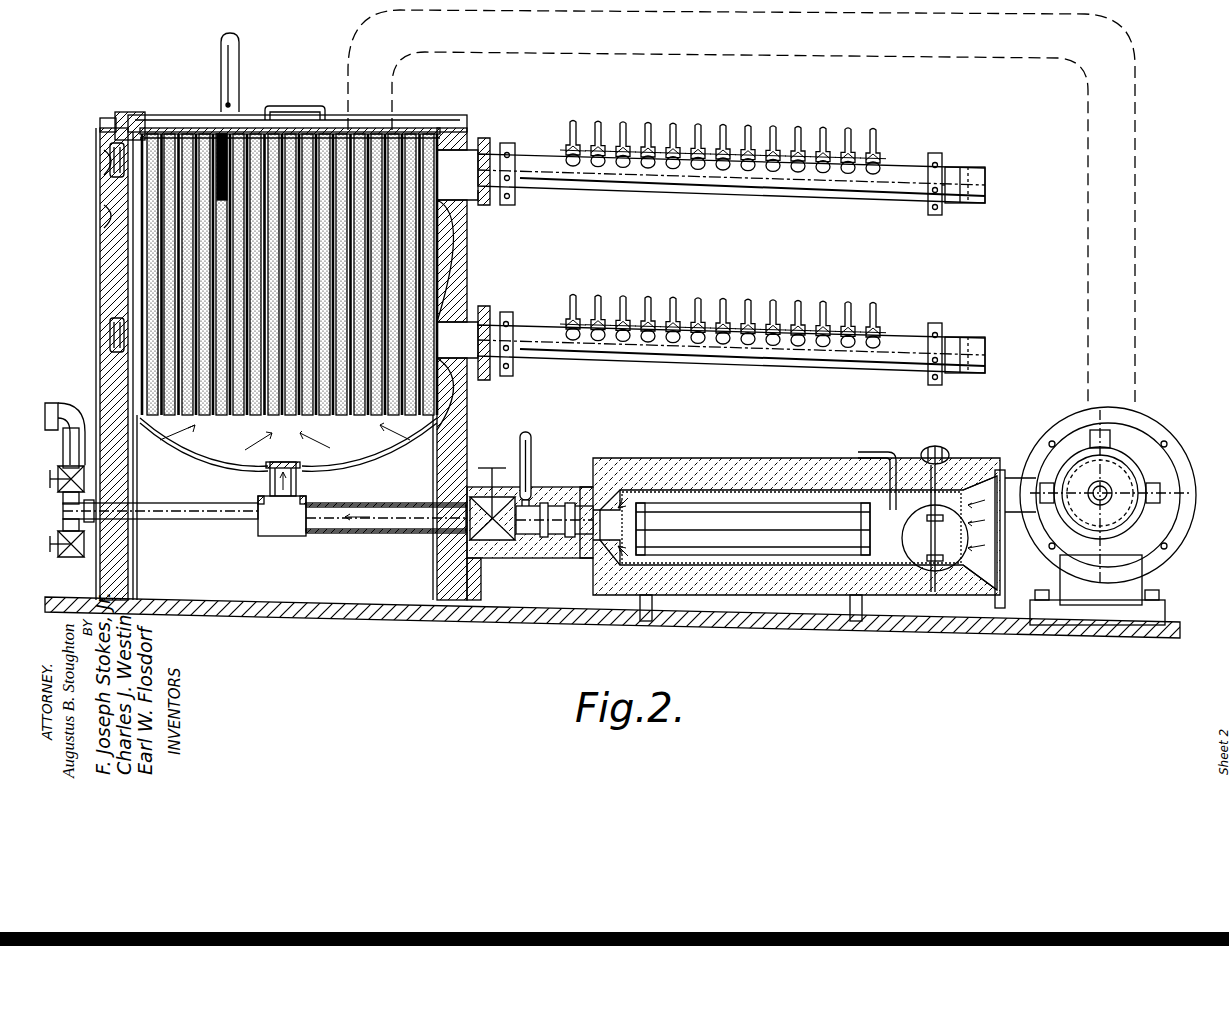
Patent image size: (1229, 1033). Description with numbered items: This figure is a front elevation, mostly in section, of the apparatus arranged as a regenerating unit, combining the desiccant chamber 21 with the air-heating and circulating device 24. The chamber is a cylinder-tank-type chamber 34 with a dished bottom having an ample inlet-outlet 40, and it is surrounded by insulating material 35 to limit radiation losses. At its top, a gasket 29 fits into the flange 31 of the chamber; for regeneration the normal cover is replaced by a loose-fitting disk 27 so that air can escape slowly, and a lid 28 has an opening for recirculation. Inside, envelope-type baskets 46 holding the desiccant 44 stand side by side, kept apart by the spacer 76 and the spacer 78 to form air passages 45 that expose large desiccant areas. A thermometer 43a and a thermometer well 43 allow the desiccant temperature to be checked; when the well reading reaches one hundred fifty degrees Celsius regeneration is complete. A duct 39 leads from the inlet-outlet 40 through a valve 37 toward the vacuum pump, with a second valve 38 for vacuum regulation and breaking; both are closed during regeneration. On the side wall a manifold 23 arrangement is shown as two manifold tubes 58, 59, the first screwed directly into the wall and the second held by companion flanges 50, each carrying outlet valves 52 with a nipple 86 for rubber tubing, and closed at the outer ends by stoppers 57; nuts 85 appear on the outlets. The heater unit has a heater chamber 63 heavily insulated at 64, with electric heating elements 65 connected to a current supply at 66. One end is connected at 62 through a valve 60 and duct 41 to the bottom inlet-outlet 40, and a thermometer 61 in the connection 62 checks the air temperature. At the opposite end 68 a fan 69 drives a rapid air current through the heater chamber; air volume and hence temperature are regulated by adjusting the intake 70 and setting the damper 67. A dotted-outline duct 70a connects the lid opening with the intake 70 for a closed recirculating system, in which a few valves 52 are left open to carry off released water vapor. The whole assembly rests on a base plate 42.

The desiccant chamber 21 is at (470, 266).
The manifold 23 is at (943, 205).
The air-heating and circulating device 24 is at (776, 458).
The loose-fitting disk 27 is at (188, 128).
The lid 28 is at (162, 128).
The gasket 29 is at (128, 118).
The flange 31 is at (108, 121).
The cylinder-tank-type chamber 34 is at (112, 208).
The insulating material 35 is at (106, 233).
The valve 37 is at (48, 470).
The valve 38 is at (70, 556).
The duct 39 is at (210, 524).
The inlet-outlet 40 is at (268, 480).
The duct 41 is at (355, 534).
The base plate 42 is at (350, 612).
The thermometer well 43 is at (232, 128).
The thermometer 43a is at (240, 52).
The desiccant 44 is at (430, 135).
The air passages 45 is at (392, 135).
The basket 46 is at (452, 222).
The companion flanges 50 is at (506, 158).
The outlet valve 52 is at (673, 143).
The stopper 57 is at (976, 168).
The manifold tube 58 is at (792, 198).
The manifold tube 59 is at (770, 372).
The valve 60 is at (483, 490).
The thermometer 61 is at (528, 434).
The connection 62 is at (548, 505).
The heater chamber 63 is at (620, 490).
The insulation 64 is at (672, 490).
The heating elements 65 is at (722, 504).
The current supply connection 66 is at (870, 452).
The damper 67 is at (945, 515).
The opposite end 68 is at (990, 474).
The fan 69 is at (1076, 438).
The intake 70 is at (1130, 452).
The duct 70a is at (1130, 262).
The spacer 76 is at (372, 136).
The spacer 78 is at (366, 430).
The nut 85 is at (860, 140).
The nipple 86 is at (808, 140).